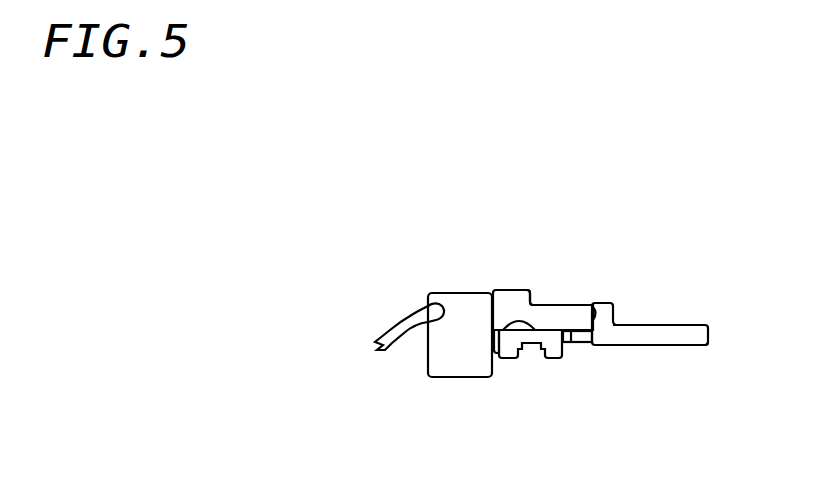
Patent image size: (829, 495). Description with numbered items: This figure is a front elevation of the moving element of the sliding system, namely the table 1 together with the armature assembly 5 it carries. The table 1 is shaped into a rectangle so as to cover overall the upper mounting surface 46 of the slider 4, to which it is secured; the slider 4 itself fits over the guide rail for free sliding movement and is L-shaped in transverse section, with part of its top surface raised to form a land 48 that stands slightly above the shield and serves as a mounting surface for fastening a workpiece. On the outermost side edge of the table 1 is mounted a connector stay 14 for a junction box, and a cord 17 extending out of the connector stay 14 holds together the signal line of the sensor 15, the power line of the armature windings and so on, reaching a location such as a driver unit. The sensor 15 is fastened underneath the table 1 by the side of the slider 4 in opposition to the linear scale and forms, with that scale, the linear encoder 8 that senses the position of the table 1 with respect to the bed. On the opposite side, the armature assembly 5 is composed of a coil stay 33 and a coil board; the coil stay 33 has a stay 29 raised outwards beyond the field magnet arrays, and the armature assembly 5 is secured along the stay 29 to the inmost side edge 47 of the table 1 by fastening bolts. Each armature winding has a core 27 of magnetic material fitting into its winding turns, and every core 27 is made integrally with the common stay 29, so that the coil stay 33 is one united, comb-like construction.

The table 1 is at (507, 313).
The slider 4 is at (553, 345).
The armature assembly 5 is at (668, 325).
The linear encoder 8 is at (578, 338).
The connector stay 14 is at (464, 317).
The sensor 15 is at (607, 389).
The cord 17 is at (395, 321).
The core 27 is at (688, 340).
The stay 29 is at (602, 301).
The coil stay 33 is at (630, 333).
The upper mounting surface 46 is at (500, 352).
The inmost side edge 47 is at (597, 300).
The land 48 is at (520, 297).